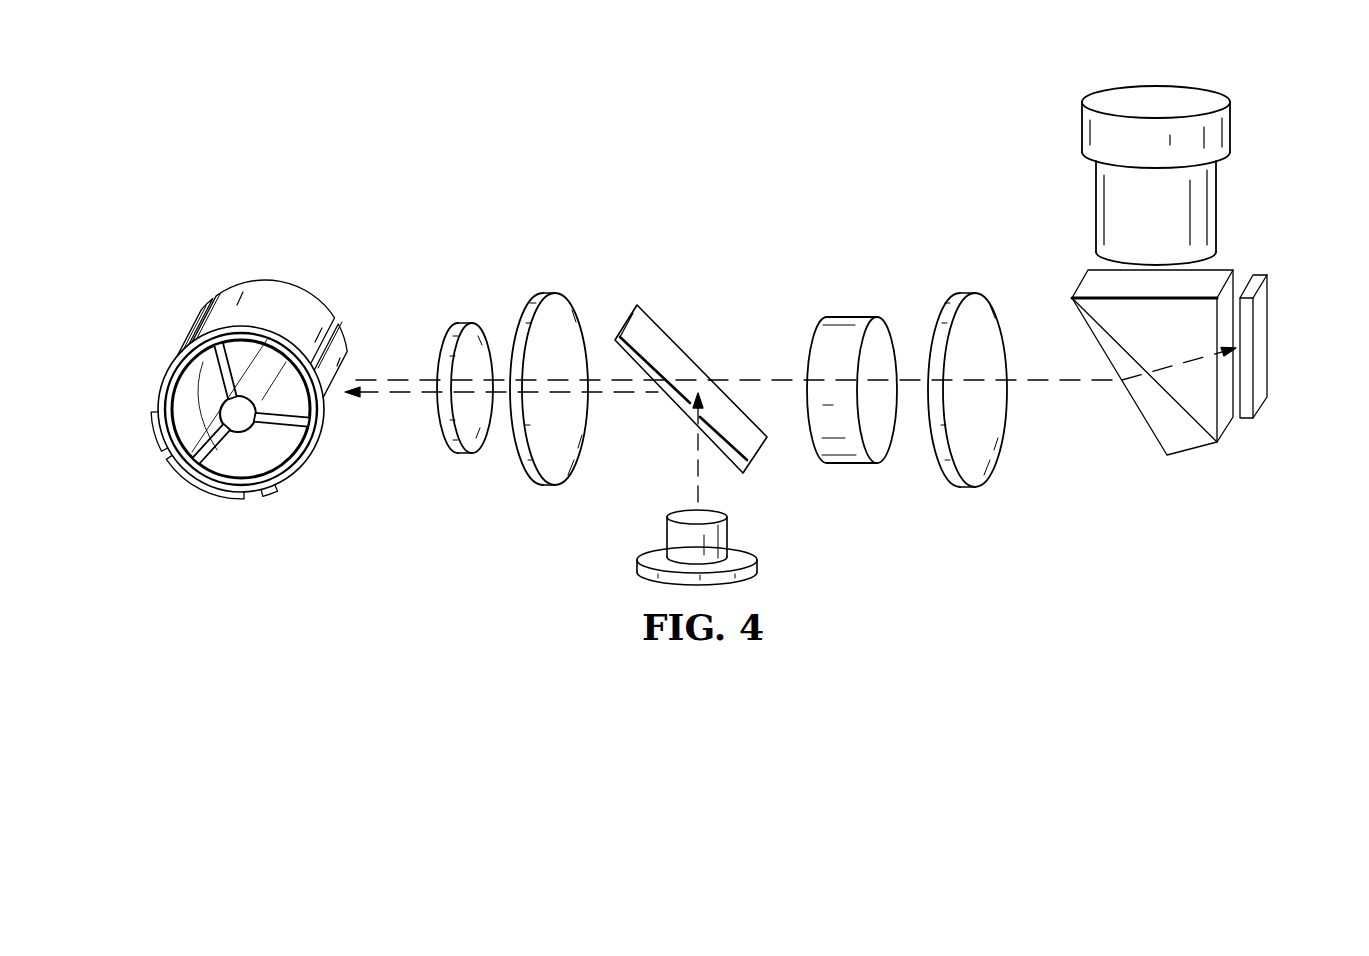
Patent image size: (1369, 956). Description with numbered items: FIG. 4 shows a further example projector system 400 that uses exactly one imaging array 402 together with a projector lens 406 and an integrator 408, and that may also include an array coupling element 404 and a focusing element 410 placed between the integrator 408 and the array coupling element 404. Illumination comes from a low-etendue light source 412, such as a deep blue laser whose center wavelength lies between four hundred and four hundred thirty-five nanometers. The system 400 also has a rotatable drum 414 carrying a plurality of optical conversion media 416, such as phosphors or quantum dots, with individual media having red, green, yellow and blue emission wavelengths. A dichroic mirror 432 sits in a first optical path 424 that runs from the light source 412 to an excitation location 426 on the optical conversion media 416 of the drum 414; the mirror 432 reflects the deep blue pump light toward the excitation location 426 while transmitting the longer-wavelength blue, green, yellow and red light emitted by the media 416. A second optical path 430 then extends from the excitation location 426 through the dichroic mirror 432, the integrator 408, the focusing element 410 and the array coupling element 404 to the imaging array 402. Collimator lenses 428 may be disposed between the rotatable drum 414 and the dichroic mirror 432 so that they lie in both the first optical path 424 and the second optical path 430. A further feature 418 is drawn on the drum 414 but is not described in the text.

The projector system 400 is at (518, 202).
The imaging array 402 is at (1268, 330).
The array coupling element 404 is at (1190, 455).
The projector lens 406 is at (1220, 205).
The integrator 408 is at (850, 465).
The focusing element 410 is at (963, 488).
The light source 412 is at (637, 565).
The rotatable drum 414 is at (255, 457).
The optical conversion media 416 is at (283, 278).
The stop 418 is at (160, 420).
The first optical path 424 is at (693, 450).
The excitation location 426 is at (352, 408).
The collimator lenses 428 is at (462, 455).
The second optical path 430 is at (1038, 383).
The dichroic mirror 432 is at (663, 325).